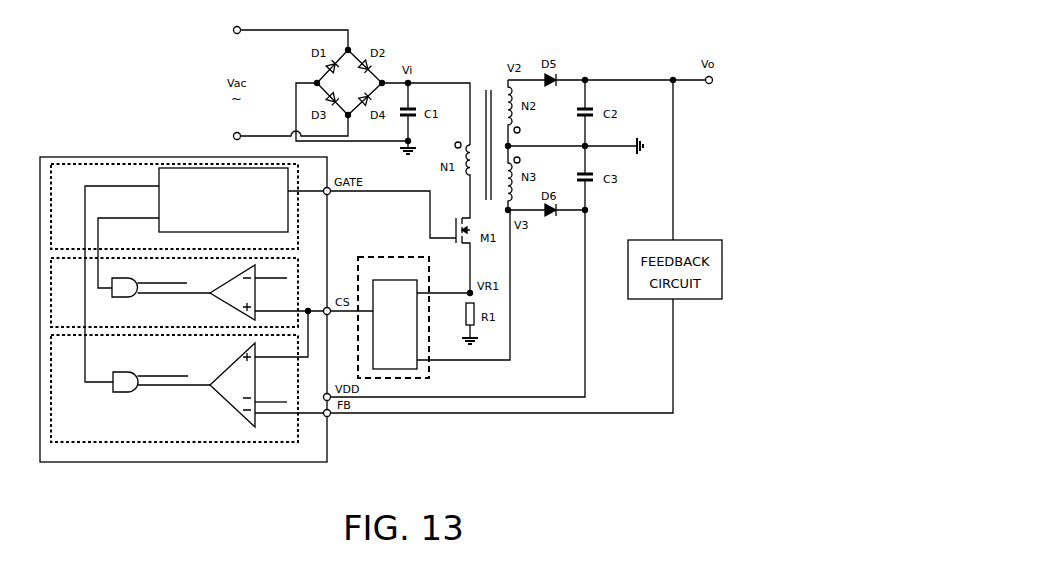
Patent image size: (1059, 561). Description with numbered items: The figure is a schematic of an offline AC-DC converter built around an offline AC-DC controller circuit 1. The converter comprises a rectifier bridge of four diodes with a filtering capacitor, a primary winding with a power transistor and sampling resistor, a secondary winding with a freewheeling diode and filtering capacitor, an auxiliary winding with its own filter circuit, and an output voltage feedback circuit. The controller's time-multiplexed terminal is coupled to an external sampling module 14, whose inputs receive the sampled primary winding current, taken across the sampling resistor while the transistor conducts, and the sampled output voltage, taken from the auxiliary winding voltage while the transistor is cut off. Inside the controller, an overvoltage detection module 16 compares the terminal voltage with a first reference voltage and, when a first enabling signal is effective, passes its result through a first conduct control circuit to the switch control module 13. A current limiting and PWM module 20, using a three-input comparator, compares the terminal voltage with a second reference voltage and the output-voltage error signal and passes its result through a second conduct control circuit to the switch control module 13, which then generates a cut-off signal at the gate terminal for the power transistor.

The offline AC-DC controller circuit 1 is at (183, 309).
The switch control module 13 is at (187, 273).
The external sampling module 14 is at (434, 295).
The overvoltage detection module 16 is at (187, 292).
The current limiting and PWM module 20 is at (187, 378).